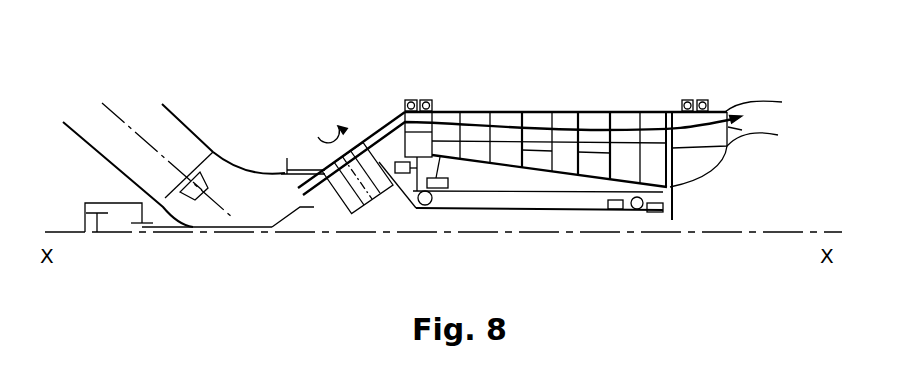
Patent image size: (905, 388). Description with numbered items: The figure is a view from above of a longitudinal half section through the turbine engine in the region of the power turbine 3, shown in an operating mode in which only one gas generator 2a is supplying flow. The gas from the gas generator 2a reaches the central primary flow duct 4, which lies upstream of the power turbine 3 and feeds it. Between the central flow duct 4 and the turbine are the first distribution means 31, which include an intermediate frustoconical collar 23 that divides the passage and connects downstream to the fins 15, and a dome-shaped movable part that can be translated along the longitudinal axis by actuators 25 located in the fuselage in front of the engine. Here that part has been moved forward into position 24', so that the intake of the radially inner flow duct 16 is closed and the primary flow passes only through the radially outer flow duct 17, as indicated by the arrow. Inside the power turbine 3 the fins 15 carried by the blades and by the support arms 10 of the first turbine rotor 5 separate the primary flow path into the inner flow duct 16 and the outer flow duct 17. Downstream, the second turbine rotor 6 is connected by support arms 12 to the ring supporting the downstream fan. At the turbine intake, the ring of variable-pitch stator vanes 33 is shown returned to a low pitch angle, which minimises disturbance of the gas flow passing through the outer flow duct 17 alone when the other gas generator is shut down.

The gas generator 2a is at (187, 128).
The central primary flow duct 4 is at (245, 93).
The first distribution means 31 is at (327, 101).
The support arms 10 is at (387, 108).
The power turbine 3 is at (458, 94).
The first turbine rotor 5 is at (537, 108).
The radially outer flow duct 17 is at (563, 108).
The fins 15 is at (593, 108).
The support arms 12 is at (690, 123).
The intermediate frustoconical collar 23 is at (323, 190).
The actuators 25 is at (117, 214).
The forward position of the movable part 24' is at (297, 247).
The variable-pitch stator vanes 33 is at (372, 205).
The second turbine rotor 6 is at (563, 163).
The radially inner flow duct 16 is at (608, 167).